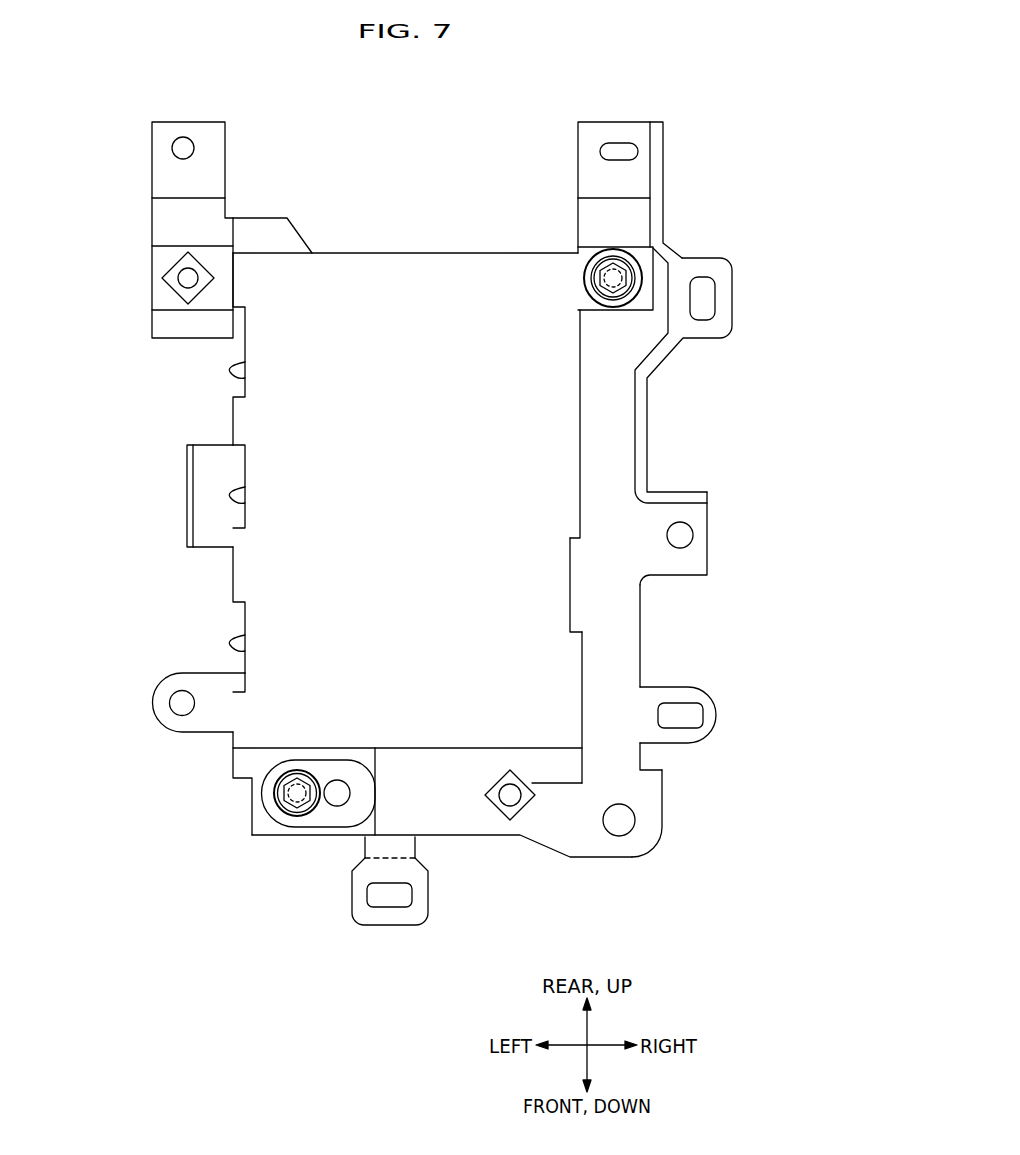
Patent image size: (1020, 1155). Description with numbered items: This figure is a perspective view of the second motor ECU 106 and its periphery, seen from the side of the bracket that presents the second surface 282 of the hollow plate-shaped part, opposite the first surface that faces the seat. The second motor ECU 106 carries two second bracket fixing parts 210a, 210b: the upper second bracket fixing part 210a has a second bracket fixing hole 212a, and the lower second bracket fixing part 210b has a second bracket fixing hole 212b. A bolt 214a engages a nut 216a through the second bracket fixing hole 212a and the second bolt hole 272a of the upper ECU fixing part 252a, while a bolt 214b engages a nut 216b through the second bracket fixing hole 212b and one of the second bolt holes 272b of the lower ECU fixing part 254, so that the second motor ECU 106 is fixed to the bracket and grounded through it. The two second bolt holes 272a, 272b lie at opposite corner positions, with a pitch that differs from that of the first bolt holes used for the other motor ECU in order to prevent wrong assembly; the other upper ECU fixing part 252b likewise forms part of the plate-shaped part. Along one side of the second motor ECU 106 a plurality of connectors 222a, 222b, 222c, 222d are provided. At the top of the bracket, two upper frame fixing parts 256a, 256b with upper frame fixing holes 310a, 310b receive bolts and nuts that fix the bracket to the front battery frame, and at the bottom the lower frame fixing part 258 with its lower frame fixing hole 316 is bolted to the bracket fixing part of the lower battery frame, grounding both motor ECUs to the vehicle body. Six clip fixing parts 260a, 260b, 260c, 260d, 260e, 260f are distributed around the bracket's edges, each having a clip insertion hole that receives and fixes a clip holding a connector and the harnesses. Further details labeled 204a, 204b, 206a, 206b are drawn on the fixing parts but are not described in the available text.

The second motor ECU 106 is at (373, 272).
The positioning hole 204a is at (178, 284).
The positioning hole 204b is at (503, 788).
The positioning protrusion 206a is at (175, 264).
The positioning protrusion 206b is at (486, 797).
The second bracket fixing part 210a is at (648, 272).
The second bracket fixing part 210b is at (321, 812).
The second bracket fixing hole 212a is at (612, 316).
The second bracket fixing hole 212b is at (300, 772).
The second bolt hole 272a is at (558, 333).
The second bolt hole 272b is at (285, 756).
The bolt 214a is at (590, 299).
The bolt 214b is at (292, 812).
The nut 216a is at (595, 247).
The nut 216b is at (337, 781).
The connector 222a is at (582, 600).
The connector 222b is at (237, 373).
The connector 222c is at (237, 495).
The connector 222d is at (237, 642).
The upper ECU fixing part 252a is at (204, 302).
The upper ECU fixing part 252b is at (660, 298).
The lower ECU fixing part 254 is at (476, 820).
The upper frame fixing part 256a is at (215, 142).
The upper frame fixing part 256b is at (622, 135).
The lower frame fixing part 258 is at (645, 854).
The clip fixing part 260a is at (187, 477).
The clip fixing part 260b is at (176, 677).
The clip fixing part 260c is at (705, 330).
The clip fixing part 260d is at (695, 535).
The clip fixing part 260e is at (717, 716).
The clip fixing part 260f is at (392, 926).
The second surface 282 is at (612, 443).
The upper frame fixing hole 310a is at (186, 148).
The upper frame fixing hole 310b is at (605, 158).
The lower frame fixing hole 316 is at (625, 820).